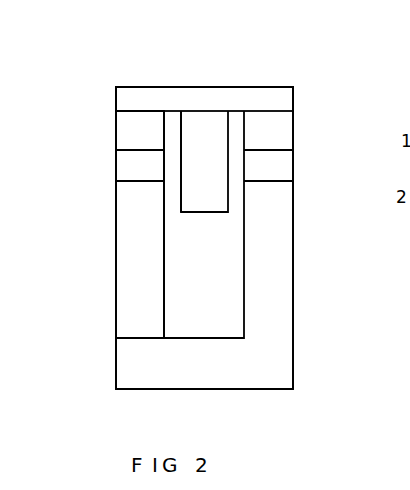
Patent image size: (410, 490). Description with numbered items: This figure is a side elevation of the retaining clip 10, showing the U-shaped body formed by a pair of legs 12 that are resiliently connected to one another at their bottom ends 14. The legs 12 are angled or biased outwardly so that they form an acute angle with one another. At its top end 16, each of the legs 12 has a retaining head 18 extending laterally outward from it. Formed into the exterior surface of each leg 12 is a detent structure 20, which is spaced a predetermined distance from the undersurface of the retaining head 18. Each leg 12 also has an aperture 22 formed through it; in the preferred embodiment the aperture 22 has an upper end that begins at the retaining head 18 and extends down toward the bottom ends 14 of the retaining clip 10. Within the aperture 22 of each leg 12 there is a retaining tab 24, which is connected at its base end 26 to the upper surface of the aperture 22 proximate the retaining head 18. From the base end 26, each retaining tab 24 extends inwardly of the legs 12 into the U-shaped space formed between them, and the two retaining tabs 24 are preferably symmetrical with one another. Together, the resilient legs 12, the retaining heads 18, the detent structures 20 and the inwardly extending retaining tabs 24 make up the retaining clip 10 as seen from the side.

The retaining clip 10 is at (323, 83).
The legs 12 is at (294, 255).
The bottom ends 14 is at (252, 391).
The top end 16 is at (115, 119).
The retaining head 18 is at (294, 95).
The detent structure 20 is at (116, 181).
The aperture 22 is at (131, 278).
The retaining tab 24 is at (195, 213).
The base end 26 is at (177, 112).